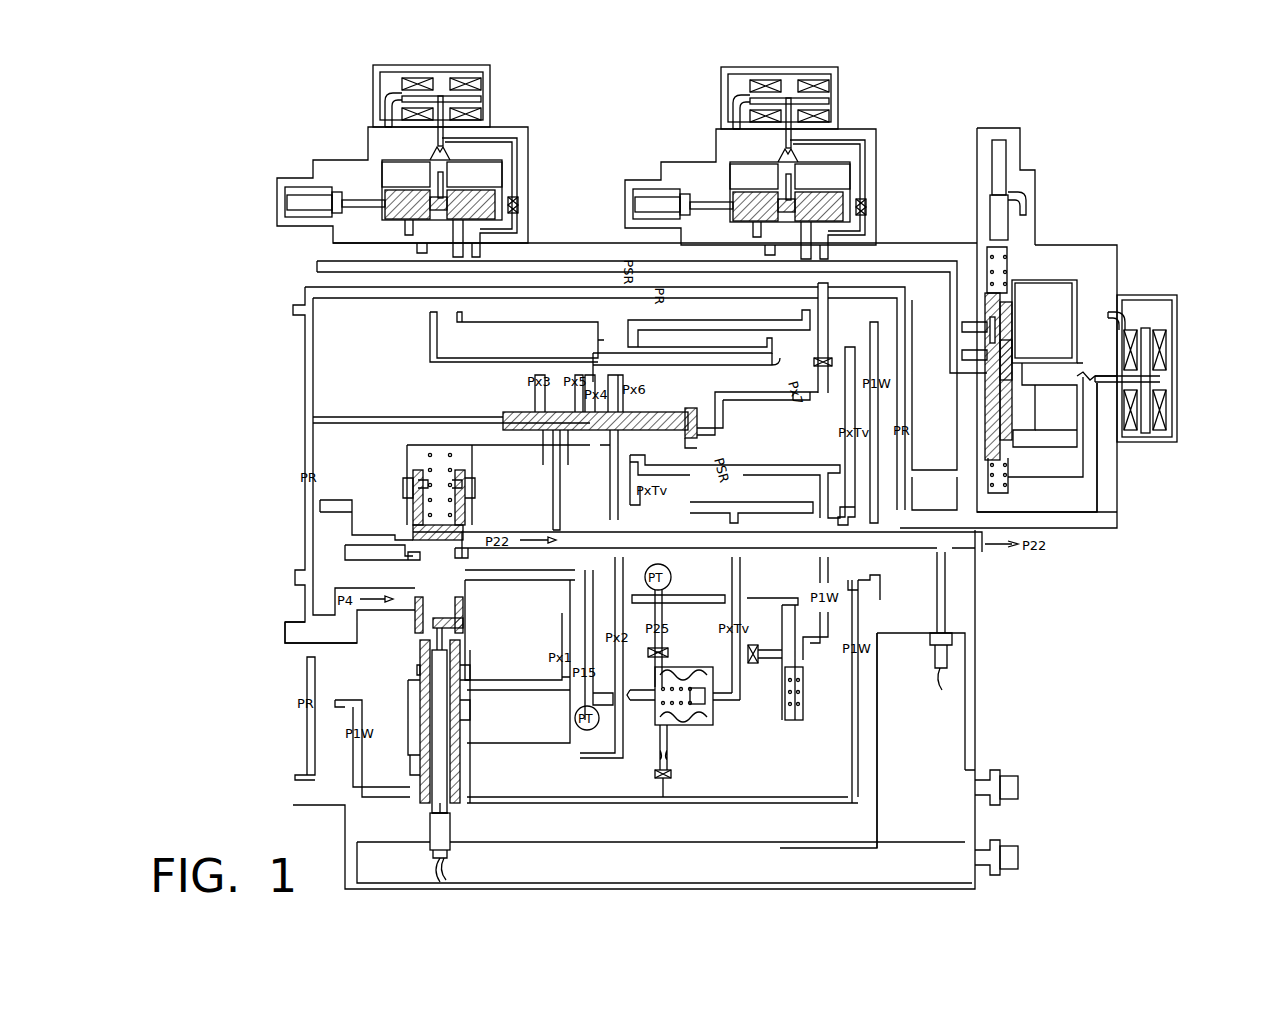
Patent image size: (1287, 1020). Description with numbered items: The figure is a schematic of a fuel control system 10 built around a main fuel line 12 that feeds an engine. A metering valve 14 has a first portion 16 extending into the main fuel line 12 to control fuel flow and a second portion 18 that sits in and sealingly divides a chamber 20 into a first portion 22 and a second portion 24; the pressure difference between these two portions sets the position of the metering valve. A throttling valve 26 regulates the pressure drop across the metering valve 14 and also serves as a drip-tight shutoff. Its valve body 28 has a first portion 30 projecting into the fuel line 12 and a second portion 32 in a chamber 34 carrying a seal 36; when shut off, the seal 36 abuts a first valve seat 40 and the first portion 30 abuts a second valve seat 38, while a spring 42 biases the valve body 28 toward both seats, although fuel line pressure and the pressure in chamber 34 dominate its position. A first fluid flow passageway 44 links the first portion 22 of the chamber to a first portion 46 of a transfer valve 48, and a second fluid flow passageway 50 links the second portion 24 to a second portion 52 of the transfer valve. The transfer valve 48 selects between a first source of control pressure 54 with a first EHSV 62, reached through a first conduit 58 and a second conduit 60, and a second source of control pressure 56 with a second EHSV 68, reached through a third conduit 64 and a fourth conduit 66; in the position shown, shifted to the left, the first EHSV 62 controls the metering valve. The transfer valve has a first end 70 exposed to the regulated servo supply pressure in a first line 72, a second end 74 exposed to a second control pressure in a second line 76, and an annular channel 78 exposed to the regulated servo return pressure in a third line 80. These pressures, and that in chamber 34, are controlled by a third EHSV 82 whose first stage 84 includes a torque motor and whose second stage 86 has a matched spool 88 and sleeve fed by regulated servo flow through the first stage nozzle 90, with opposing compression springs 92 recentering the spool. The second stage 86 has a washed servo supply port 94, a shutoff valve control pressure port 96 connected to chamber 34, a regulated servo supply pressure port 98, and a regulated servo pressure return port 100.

The fuel control system 10 is at (248, 440).
The main fuel line 12 is at (295, 645).
The metering valve 14 is at (415, 670).
The first portion 16 is at (412, 620).
The second portion 18 is at (418, 740).
The chamber 20 is at (408, 700).
The first portion 22 is at (470, 695).
The second portion 24 is at (470, 752).
The throttling valve 26 is at (400, 495).
The valve body 28 is at (413, 512).
The first portion 30 is at (432, 545).
The second portion 32 is at (410, 470).
The chamber 34 is at (440, 450).
The seal 36 is at (408, 475).
The second valve seat 38 is at (468, 545).
The first valve seat 40 is at (470, 500).
The spring 42 is at (405, 520).
The first fluid flow passageway 44 is at (558, 640).
The first portion 46 is at (545, 432).
The transfer valve 48 is at (658, 412).
The second fluid flow passageway 50 is at (595, 760).
The second portion 52 is at (600, 452).
The first source of control pressure 54 is at (330, 240).
The second source of control pressure 56 is at (885, 133).
The first conduit 58 is at (425, 325).
The second conduit 60 is at (455, 322).
The first EHSV 62 is at (375, 140).
The third conduit 64 is at (777, 362).
The fourth conduit 66 is at (723, 328).
The second EHSV 68 is at (830, 175).
The first end 70 is at (505, 408).
The first line 72 is at (470, 415).
The second end 74 is at (693, 440).
The second line 76 is at (742, 402).
The annular channel 78 is at (665, 470).
The third line 80 is at (750, 477).
The third EHSV 82 is at (1195, 340).
The first stage 84 is at (1160, 440).
The second stage 86 is at (1020, 345).
The spool 88 is at (1010, 360).
The first stage nozzle 90 is at (1100, 440).
The compression springs 92 is at (1010, 275).
The washed servo supply port 94 is at (975, 320).
The shutoff valve control pressure port 96 is at (975, 355).
The regulated servo supply pressure port 98 is at (1022, 448).
The regulated servo pressure return port 100 is at (985, 420).